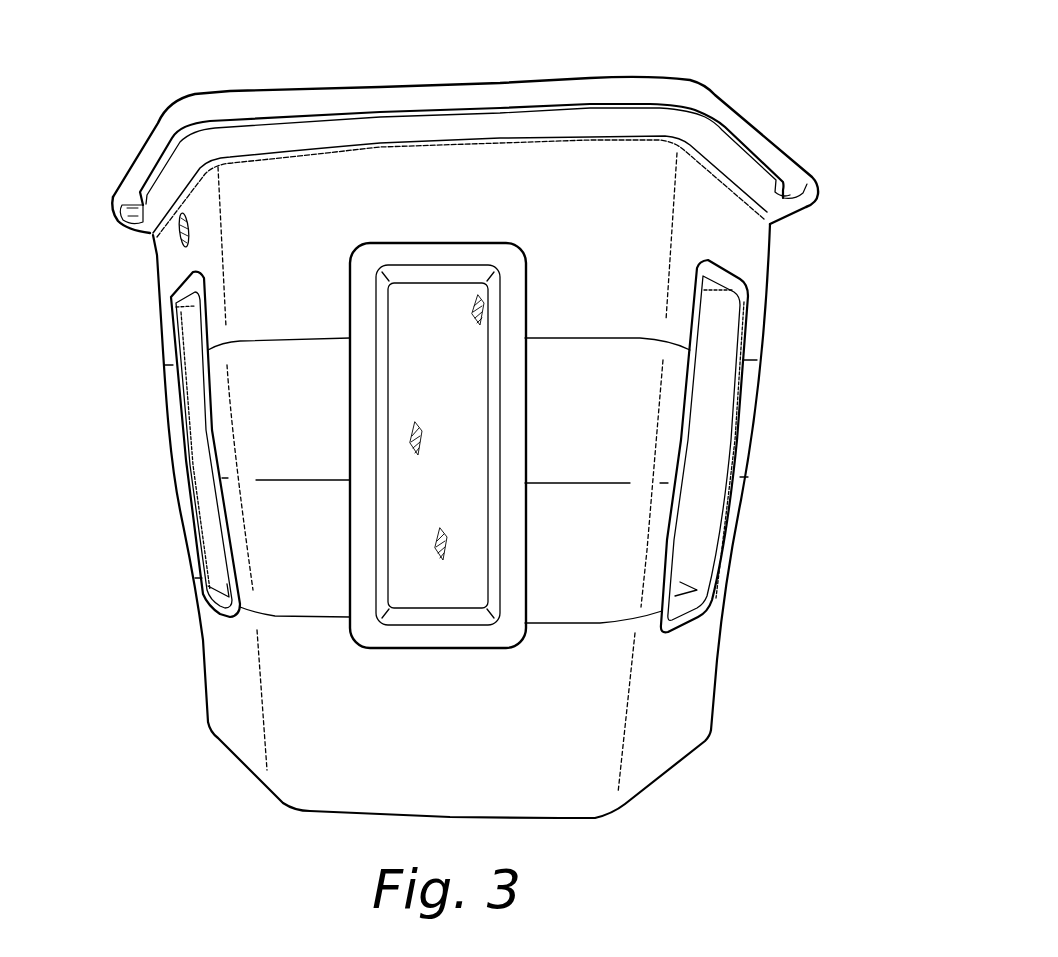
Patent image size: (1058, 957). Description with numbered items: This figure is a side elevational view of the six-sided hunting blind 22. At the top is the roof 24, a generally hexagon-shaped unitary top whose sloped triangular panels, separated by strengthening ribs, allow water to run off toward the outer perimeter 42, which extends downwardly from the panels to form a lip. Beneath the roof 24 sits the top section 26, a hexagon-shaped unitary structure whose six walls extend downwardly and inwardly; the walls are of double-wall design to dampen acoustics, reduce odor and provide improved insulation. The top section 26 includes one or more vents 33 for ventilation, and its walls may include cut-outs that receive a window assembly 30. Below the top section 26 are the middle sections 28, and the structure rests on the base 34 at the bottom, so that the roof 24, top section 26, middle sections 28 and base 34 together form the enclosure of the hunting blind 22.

The six-sided hunting blind 22 is at (848, 78).
The roof 24 is at (532, 88).
The top section 26 is at (738, 236).
The middle section 28 is at (608, 385).
The window assembly 30 is at (197, 425).
The vent 33 is at (178, 243).
The base 34 is at (682, 704).
The outer perimeter 42 is at (157, 190).